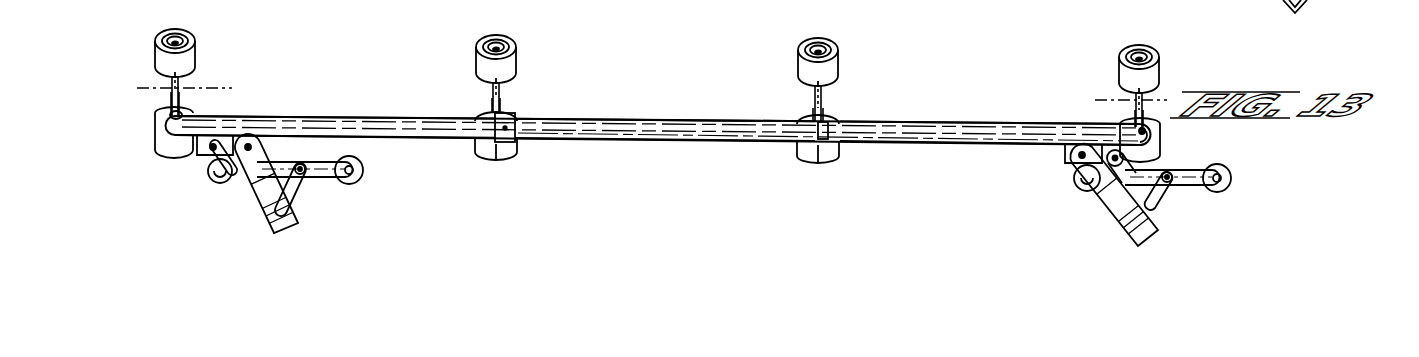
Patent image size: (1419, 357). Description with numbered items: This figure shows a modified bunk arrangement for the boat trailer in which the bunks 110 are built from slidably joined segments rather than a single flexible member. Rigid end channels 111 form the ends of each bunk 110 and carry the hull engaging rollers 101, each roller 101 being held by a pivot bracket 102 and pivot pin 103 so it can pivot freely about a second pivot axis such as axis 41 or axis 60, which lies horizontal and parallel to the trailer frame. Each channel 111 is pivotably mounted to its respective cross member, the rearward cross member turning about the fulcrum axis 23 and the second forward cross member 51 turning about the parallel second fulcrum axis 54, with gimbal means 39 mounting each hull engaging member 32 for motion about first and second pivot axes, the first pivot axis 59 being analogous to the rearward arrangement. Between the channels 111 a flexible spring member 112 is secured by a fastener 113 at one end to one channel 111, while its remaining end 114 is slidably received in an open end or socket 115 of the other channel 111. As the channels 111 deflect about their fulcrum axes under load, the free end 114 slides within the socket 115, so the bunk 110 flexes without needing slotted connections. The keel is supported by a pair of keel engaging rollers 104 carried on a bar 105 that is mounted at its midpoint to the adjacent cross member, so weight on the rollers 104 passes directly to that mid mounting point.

The fulcrum axis 23 is at (250, 147).
The hull engaging member 32 is at (527, 72).
The gimbal means 39 is at (237, 101).
The second pivot axis 41 is at (137, 88).
The second forward cross member 51 is at (1127, 212).
The second fulcrum axis 54 is at (1158, 159).
The first pivot axis of second gimbal means 59 is at (1090, 150).
The second pivot axis of second gimbal means 60 is at (1113, 100).
The hull engaging roller 101 is at (200, 64).
The pivot bracket 102 is at (822, 100).
The pivot pin 103 is at (1328, 6).
The keel engaging roller 104 is at (221, 184).
The bar 105 is at (322, 181).
The bunk 110 is at (693, 112).
The rigid end channel 111 is at (438, 128).
The flexible spring member 112 is at (673, 122).
The fastener 113 is at (510, 147).
The remaining end of spring member 114 is at (812, 125).
The open end or socket 115 is at (823, 135).